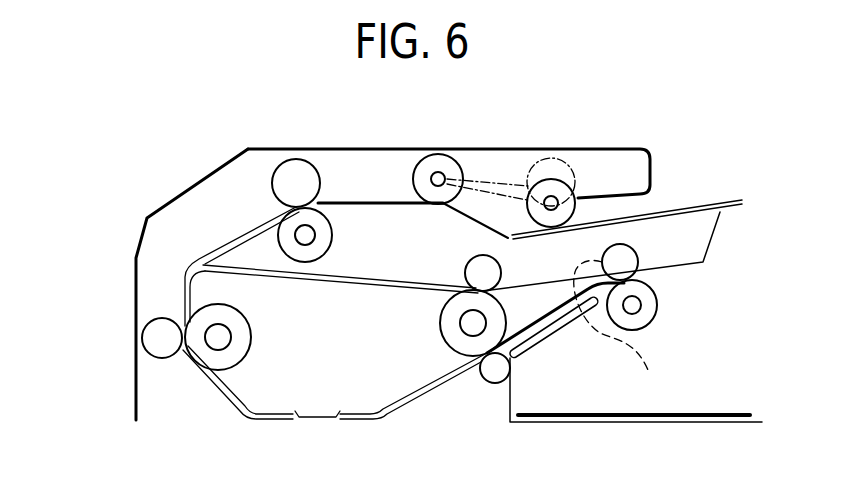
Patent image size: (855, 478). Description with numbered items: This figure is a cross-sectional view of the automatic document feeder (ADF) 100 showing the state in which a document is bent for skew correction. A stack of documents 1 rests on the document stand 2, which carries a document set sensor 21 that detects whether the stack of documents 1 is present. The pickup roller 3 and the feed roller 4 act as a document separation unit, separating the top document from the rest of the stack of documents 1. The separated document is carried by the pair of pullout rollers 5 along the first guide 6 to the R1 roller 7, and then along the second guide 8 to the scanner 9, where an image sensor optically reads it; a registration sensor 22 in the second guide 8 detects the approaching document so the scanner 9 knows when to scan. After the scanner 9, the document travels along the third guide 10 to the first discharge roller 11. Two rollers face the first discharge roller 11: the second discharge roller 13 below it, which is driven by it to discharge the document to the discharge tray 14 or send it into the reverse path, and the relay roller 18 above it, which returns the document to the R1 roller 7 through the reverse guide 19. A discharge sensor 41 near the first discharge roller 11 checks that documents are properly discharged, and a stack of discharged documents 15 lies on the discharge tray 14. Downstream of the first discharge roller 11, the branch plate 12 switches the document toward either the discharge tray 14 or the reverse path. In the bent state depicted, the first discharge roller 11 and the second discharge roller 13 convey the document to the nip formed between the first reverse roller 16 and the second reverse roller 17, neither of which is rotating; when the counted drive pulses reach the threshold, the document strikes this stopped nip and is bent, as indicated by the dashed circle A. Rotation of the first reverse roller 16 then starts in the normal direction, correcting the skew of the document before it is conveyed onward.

The automatic document feeder (ADF) 100 is at (103, 163).
The stack of documents 1 is at (718, 200).
The document stand 2 is at (720, 214).
The pickup roller 3 is at (578, 200).
The feed roller 4 is at (441, 155).
The pair of pullout rollers 5 is at (296, 159).
The first guide 6 is at (220, 242).
The R1 roller 7 is at (152, 316).
The second guide 8 is at (215, 393).
The scanner 9 is at (320, 421).
The third guide 10 is at (404, 408).
The first discharge roller 11 is at (440, 318).
The branch plate 12 is at (567, 337).
The second discharge roller 13 is at (493, 383).
The discharge tray 14 is at (758, 420).
The stack of documents discharged 15 is at (727, 413).
The first reverse roller 16 is at (657, 308).
The second reverse roller 17 is at (637, 257).
The relay roller 18 is at (465, 255).
The reverse guide 19 is at (313, 283).
The document set sensor 21 is at (545, 247).
The registration sensor 22 is at (249, 382).
The discharge sensor 41 is at (440, 365).
The dashed circle A is at (614, 327).